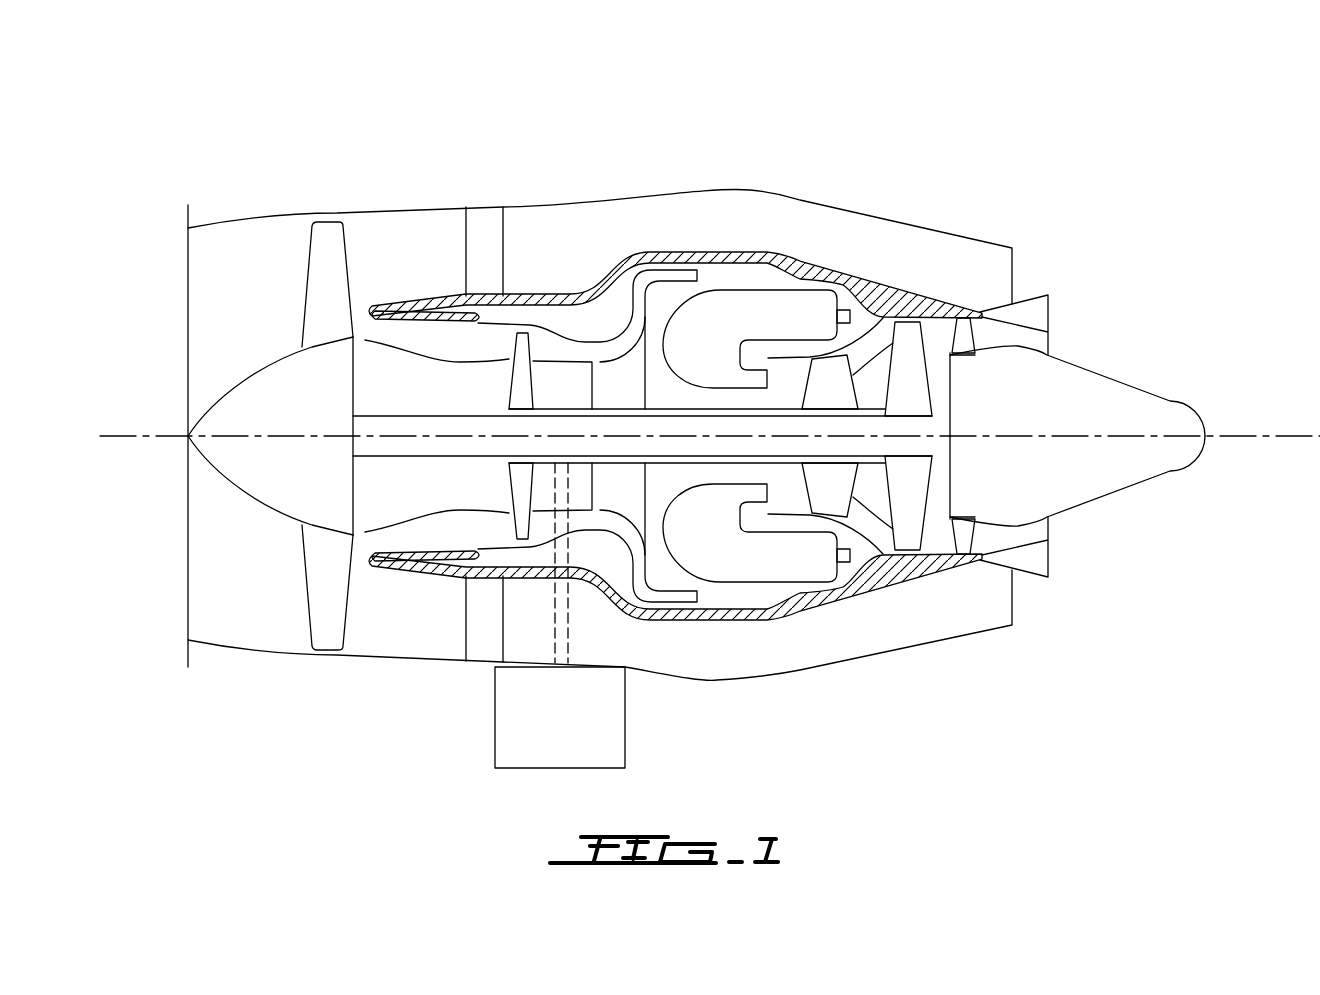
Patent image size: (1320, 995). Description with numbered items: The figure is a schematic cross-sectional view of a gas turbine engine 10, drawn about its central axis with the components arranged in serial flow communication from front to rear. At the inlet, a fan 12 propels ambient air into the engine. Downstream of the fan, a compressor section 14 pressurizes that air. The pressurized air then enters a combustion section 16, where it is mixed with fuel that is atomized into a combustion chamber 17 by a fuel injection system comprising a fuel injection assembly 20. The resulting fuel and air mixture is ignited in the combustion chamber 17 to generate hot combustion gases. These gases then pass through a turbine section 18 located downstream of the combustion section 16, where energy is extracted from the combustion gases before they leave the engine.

The gas turbine engine 10 is at (903, 155).
The fan 12 is at (323, 573).
The compressor section 14 is at (577, 353).
The combustion section 16 is at (752, 317).
The combustion chamber 17 is at (813, 307).
The turbine section 18 is at (872, 495).
The fuel injection assembly 20 is at (850, 313).